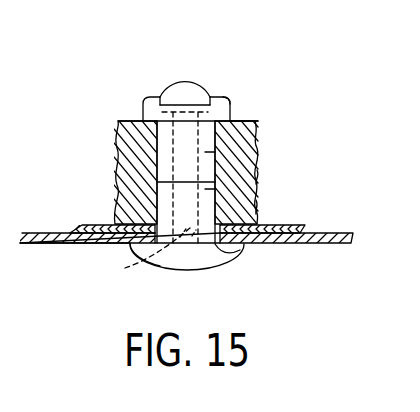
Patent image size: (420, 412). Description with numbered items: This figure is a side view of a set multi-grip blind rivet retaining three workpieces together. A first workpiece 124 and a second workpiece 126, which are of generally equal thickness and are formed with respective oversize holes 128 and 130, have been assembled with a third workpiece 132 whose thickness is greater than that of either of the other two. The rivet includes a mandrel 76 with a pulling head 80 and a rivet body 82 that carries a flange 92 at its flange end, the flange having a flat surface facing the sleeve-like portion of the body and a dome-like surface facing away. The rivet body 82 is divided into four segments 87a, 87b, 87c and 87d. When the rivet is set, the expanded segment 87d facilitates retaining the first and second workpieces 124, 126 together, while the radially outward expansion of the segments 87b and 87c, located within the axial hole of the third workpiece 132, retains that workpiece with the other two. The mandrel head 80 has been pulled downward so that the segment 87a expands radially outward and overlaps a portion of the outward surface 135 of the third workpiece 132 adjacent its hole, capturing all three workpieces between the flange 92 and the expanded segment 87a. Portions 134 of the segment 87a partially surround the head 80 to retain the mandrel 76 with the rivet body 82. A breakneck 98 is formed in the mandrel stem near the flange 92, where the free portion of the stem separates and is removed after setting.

The pulling head 80 is at (170, 92).
The portions 134 is at (217, 94).
The segment 87a is at (230, 99).
The outward surface 135 is at (248, 120).
The rivet body 82 is at (225, 139).
The segment 87b is at (250, 182).
The segment 87c is at (250, 209).
The mandrel 76 is at (164, 141).
The third workpiece 132 is at (123, 165).
The oversize hole 128 is at (136, 207).
The first workpiece 124 is at (73, 230).
The second workpiece 126 is at (41, 248).
The flange 92 is at (231, 262).
The breakneck 98 is at (143, 262).
The segment 87d is at (203, 245).
The oversize hole 130 is at (206, 244).